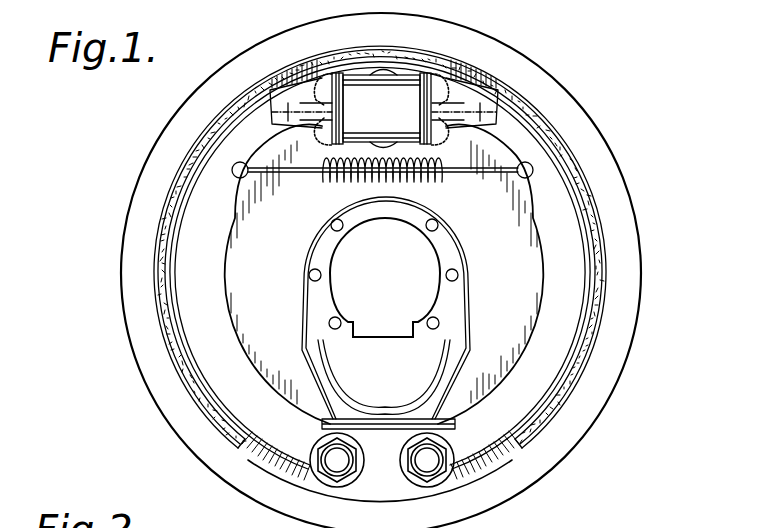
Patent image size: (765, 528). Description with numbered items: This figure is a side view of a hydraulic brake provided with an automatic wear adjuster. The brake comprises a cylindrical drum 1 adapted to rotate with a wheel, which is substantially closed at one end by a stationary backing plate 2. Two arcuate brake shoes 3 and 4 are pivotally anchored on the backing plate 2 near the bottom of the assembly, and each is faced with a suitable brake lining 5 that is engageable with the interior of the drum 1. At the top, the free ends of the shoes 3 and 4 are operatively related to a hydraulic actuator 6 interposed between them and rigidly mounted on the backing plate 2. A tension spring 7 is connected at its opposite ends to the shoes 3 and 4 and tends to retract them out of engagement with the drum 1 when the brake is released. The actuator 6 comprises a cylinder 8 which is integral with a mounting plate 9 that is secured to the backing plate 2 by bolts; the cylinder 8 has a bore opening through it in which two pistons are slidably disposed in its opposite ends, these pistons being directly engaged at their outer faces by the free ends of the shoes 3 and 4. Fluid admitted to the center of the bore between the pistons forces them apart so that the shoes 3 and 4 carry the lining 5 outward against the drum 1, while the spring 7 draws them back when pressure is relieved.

The cylindrical drum 1 is at (627, 322).
The backing plate 2 is at (468, 232).
The brake shoe 3 is at (250, 345).
The brake shoe 4 is at (556, 270).
The brake lining 5 is at (163, 262).
The hydraulic actuator 6 is at (391, 76).
The tension spring 7 is at (435, 176).
The cylinder 8 is at (378, 77).
The mounting plate 9 is at (386, 72).